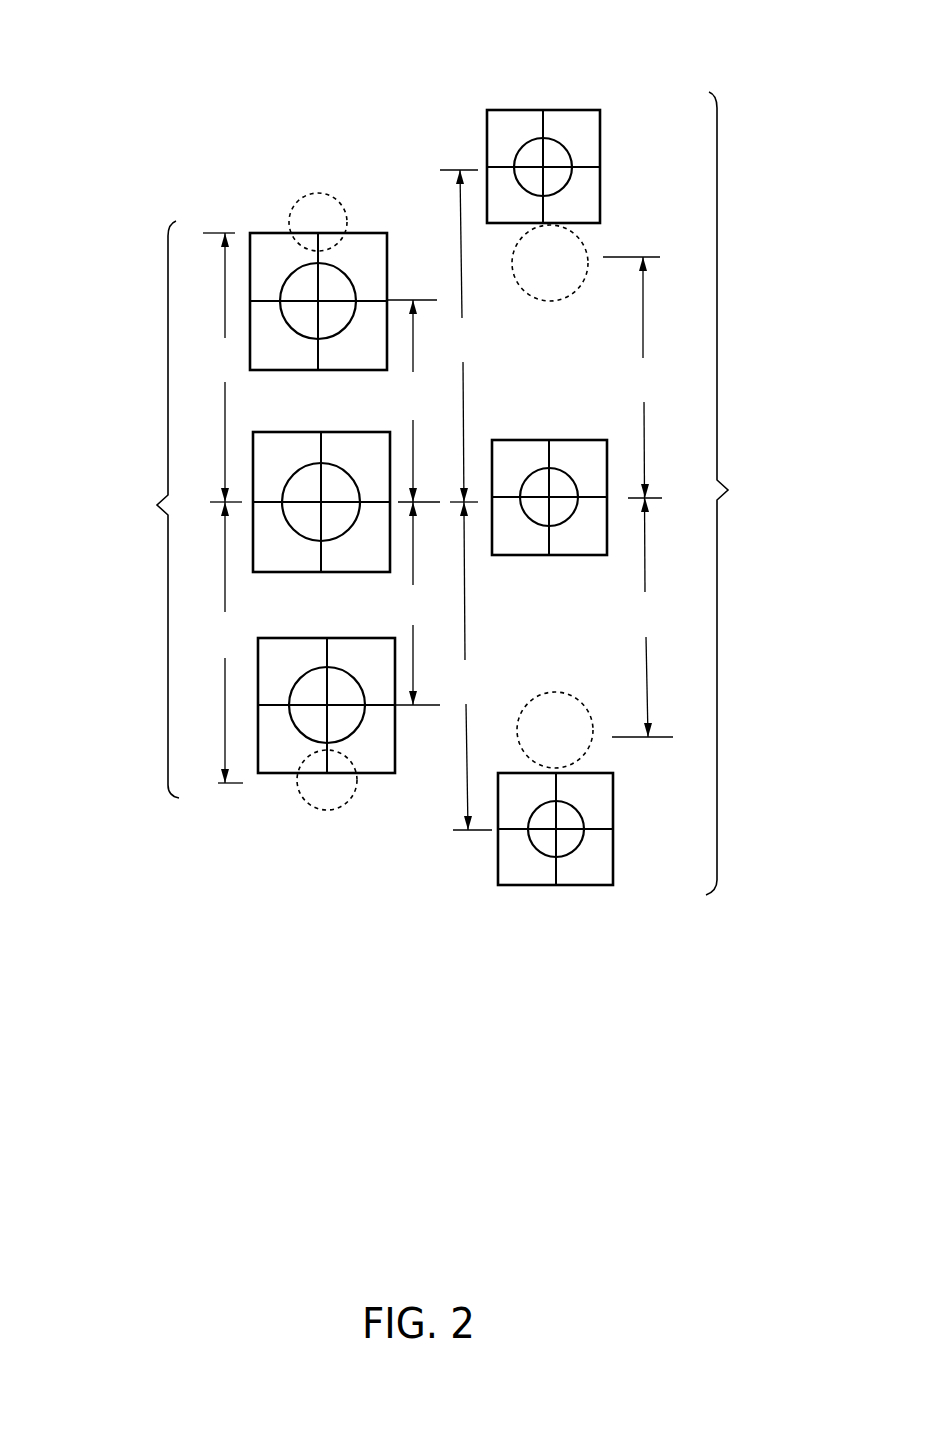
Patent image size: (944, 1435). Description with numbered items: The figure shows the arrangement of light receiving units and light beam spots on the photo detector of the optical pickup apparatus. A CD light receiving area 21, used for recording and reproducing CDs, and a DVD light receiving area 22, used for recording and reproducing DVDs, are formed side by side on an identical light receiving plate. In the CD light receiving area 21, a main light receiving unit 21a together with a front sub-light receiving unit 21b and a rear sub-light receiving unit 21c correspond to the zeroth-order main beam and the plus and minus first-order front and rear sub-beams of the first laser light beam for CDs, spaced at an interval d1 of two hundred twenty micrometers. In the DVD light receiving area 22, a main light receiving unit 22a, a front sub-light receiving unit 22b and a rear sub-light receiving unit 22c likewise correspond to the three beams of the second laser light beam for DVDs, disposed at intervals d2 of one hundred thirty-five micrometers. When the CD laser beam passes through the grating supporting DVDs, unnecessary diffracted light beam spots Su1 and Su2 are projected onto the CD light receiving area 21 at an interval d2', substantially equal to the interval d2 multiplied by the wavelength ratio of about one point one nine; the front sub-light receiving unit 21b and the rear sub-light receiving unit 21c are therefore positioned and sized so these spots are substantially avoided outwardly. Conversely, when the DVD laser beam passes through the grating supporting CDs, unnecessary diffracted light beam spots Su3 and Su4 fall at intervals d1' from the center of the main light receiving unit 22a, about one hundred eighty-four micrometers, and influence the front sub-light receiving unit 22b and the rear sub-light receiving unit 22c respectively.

The CD light receiving area 21 is at (728, 490).
The DVD light receiving area 22 is at (157, 505).
The main light receiving unit 21a is at (574, 556).
The front sub-light receiving unit 21b is at (558, 110).
The rear sub-light receiving unit 21c is at (585, 886).
The main light receiving unit 22a is at (339, 573).
The front sub-light receiving unit 22b is at (272, 233).
The rear sub-light receiving unit 22c is at (372, 775).
The unnecessary diffracted light beam spot Su1 is at (540, 301).
The unnecessary diffracted light beam spot Su2 is at (527, 696).
The unnecessary diffracted light beam spot Su3 is at (330, 200).
The unnecessary diffracted light beam spot Su4 is at (332, 804).
The interval d1 is at (464, 500).
The interval d2 is at (413, 502).
The interval d1' is at (222, 508).
The interval d2' is at (638, 497).